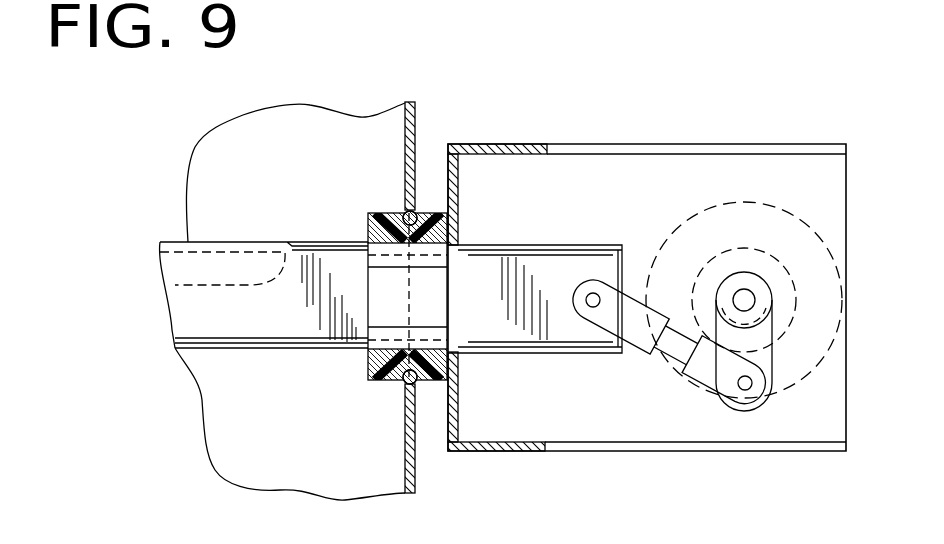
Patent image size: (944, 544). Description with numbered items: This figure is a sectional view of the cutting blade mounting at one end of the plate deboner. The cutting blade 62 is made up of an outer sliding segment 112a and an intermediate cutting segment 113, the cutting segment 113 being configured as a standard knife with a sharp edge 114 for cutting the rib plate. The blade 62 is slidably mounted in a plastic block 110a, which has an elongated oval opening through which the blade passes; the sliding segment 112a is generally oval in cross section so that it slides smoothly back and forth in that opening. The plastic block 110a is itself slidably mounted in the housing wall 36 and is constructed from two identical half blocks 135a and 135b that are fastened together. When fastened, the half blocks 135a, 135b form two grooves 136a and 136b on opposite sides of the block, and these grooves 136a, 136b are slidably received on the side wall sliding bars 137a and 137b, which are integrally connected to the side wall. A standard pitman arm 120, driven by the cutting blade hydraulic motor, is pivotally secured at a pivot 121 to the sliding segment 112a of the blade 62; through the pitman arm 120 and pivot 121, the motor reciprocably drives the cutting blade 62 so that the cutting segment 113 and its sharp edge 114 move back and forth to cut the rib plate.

The back wall 36 is at (416, 103).
The plastic block 110a is at (431, 203).
The side wall sliding bar 137a is at (408, 211).
The groove 136a is at (397, 212).
The sharp edge 114 is at (172, 242).
The intermediate cutting segment 113 is at (245, 241).
The outer sliding segment 112a is at (548, 270).
The cutting blade 62 is at (266, 354).
The groove 136b is at (392, 372).
The half block 135b is at (391, 381).
The side wall sliding bar 137b is at (401, 384).
The half block 135a is at (435, 388).
The pivot 121 is at (592, 307).
The pitman arm 120 is at (672, 337).